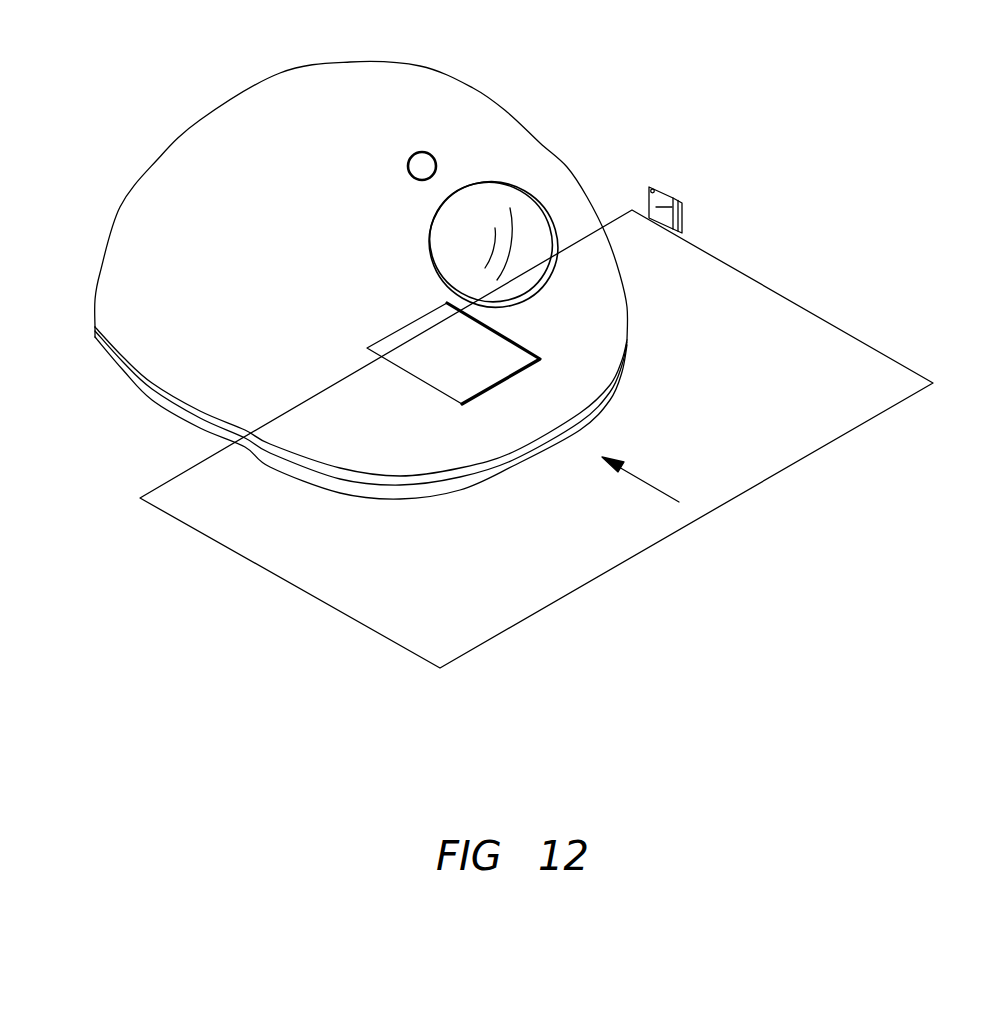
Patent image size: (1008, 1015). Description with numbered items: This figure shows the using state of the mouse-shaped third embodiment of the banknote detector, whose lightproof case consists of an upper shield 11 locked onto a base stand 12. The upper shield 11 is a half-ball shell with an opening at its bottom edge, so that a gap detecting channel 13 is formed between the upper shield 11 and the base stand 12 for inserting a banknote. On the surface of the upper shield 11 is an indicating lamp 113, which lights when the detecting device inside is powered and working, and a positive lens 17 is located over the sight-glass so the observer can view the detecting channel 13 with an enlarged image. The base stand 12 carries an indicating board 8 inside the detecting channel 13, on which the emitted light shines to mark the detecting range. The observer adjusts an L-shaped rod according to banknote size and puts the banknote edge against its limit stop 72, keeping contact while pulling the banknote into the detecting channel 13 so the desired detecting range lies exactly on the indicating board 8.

The upper shield 11 is at (220, 179).
The base stand 12 is at (158, 403).
The detecting channel 13 is at (275, 454).
The indicating lamp 113 is at (422, 166).
The positive lens 17 is at (527, 230).
The limit stop 72 is at (668, 207).
The indicating board 8 is at (460, 347).